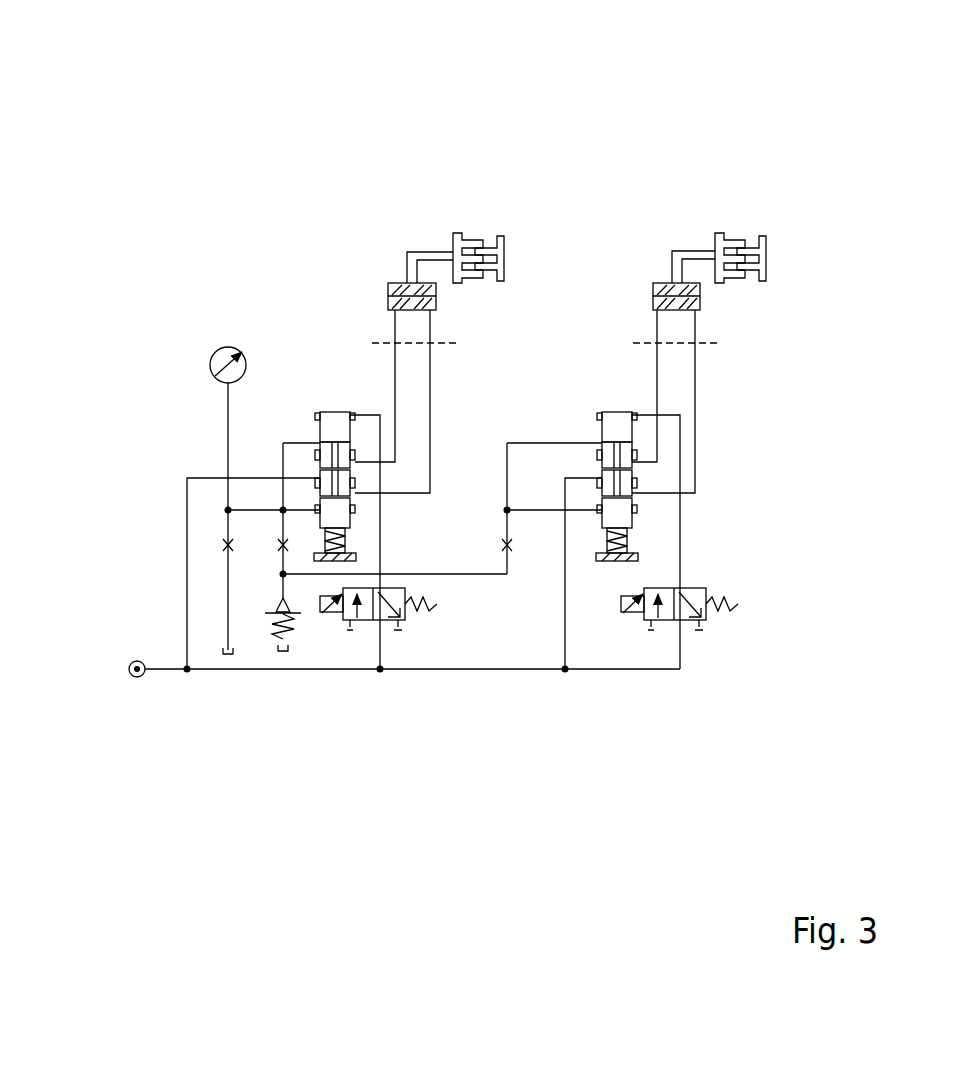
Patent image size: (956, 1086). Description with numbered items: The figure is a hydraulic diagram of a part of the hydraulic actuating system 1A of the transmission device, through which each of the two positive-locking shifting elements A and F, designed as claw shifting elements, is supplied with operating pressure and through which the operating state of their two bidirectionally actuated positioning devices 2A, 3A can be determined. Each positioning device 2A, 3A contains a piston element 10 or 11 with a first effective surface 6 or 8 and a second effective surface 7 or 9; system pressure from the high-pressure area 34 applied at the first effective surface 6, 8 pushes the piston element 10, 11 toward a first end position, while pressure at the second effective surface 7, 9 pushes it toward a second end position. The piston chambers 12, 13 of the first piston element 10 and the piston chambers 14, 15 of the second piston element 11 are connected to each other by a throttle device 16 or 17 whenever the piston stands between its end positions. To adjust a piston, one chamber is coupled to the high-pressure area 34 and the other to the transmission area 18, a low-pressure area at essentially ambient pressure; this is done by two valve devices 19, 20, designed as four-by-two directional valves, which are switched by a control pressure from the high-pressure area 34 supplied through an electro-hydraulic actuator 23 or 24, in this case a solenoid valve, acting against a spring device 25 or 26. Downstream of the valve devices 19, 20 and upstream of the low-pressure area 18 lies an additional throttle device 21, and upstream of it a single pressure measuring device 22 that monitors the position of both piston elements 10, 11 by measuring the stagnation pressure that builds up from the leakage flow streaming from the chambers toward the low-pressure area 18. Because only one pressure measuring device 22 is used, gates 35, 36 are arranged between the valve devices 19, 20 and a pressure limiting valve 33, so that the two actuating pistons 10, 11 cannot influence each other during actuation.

The hydraulic actuating system 1A is at (272, 122).
The positioning device 2A is at (388, 285).
The positioning device 3A is at (657, 272).
The first effective surface 6 is at (388, 293).
The second effective surface 7 is at (437, 310).
The first effective surface 8 is at (653, 290).
The second effective surface 9 is at (700, 305).
The piston element 10 is at (390, 283).
The piston element 11 is at (662, 283).
The piston chamber 12 is at (388, 303).
The piston chamber 13 is at (437, 297).
The piston chamber 14 is at (653, 297).
The piston chamber 15 is at (699, 283).
The throttle device 16 is at (394, 283).
The throttle device 17 is at (698, 312).
The transmission area 18 is at (221, 664).
The valve device 19 is at (324, 390).
The valve device 20 is at (615, 390).
The additional throttle device 21 is at (213, 553).
The pressure measuring device 22 is at (214, 350).
The electro-hydraulic actuator 23 is at (367, 628).
The electro-hydraulic actuator 24 is at (672, 628).
The spring device 25 is at (330, 560).
The spring device 26 is at (630, 550).
The pressure limiting valve 33 is at (276, 652).
The high-pressure area 34 is at (137, 680).
The gate 35 is at (270, 552).
The gate 36 is at (518, 560).
The positive-locking shifting element A is at (460, 227).
The positive-locking shifting element F is at (731, 228).